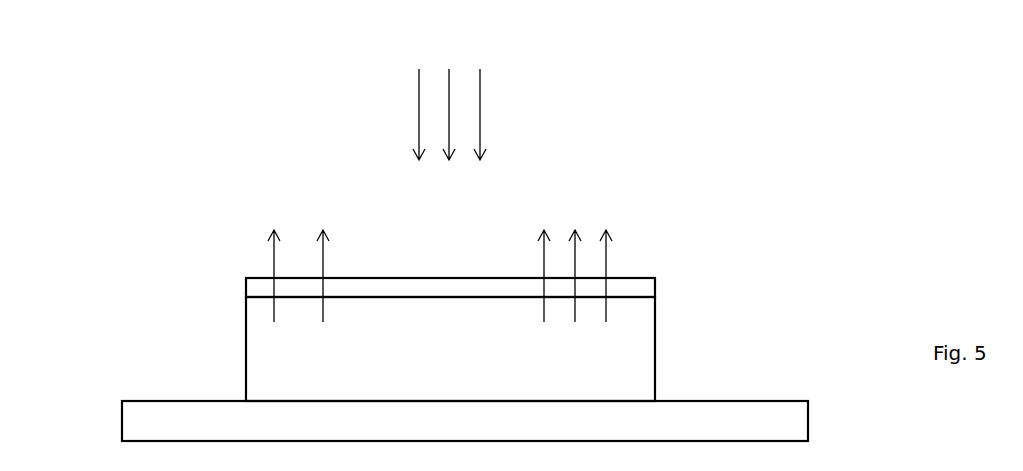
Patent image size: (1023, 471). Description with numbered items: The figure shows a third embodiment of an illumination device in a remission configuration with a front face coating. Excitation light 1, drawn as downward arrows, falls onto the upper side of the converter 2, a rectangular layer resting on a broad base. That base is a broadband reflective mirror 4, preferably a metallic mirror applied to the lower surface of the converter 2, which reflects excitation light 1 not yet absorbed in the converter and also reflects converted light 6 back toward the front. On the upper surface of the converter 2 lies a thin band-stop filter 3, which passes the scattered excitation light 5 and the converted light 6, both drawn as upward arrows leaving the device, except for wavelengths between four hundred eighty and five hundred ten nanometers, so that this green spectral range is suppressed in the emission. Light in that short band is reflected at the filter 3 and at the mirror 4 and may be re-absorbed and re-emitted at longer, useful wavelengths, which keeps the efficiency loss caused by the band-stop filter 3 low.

The excitation light 1 is at (449, 101).
The converter 2 is at (628, 345).
The band-stop filter 3 is at (623, 288).
The broadband reflective mirror 4 is at (773, 424).
The scattered excitation light 5 is at (575, 263).
The converted light 6 is at (298, 260).